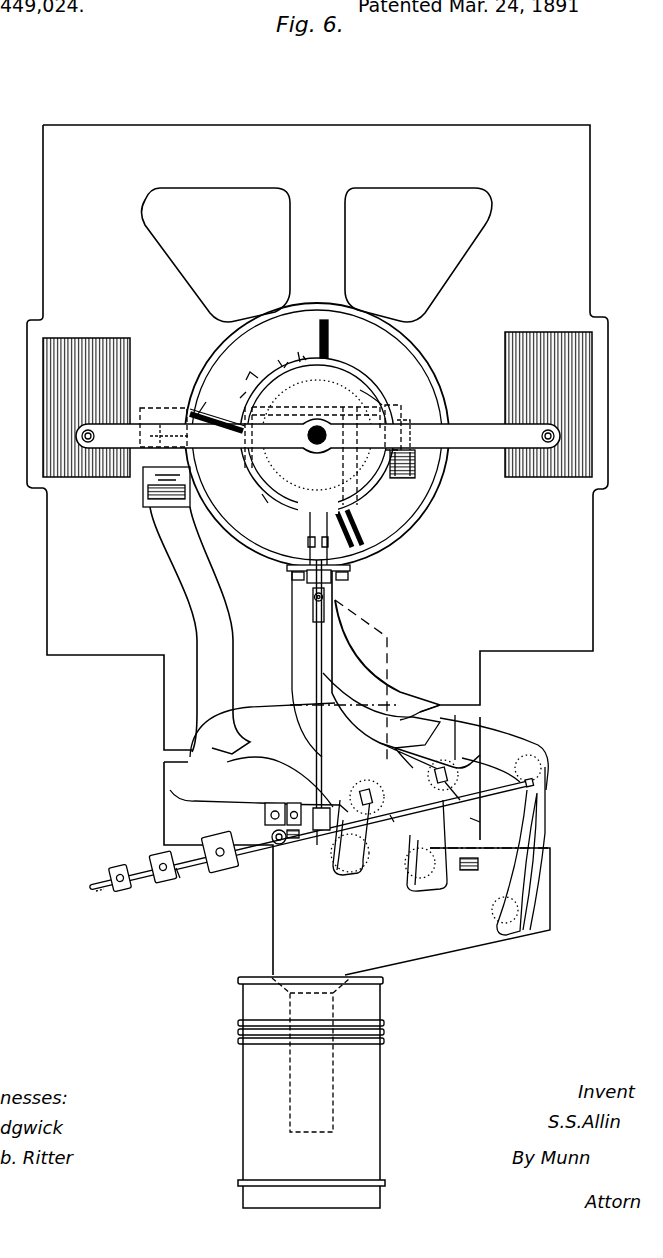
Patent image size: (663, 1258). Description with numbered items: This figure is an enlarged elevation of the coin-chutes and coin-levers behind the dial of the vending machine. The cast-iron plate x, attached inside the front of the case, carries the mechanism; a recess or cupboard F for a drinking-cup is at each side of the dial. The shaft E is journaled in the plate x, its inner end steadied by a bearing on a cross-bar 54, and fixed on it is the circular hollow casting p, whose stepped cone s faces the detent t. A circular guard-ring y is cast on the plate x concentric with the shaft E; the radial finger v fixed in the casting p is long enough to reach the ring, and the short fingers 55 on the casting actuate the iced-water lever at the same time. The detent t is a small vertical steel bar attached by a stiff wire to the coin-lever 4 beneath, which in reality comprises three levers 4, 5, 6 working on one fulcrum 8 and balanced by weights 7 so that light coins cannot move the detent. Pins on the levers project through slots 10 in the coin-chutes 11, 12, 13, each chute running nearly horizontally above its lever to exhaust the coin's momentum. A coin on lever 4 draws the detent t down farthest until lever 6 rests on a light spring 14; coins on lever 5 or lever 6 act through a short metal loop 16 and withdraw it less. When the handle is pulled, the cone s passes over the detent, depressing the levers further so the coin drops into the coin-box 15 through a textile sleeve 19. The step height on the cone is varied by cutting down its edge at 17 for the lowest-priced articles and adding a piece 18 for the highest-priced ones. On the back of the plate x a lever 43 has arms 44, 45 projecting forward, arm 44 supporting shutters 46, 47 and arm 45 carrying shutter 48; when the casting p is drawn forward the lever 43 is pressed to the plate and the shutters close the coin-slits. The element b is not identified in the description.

The cast-iron plate x is at (317, 550).
The recess or cupboard F is at (317, 404).
The circular guard-ring y is at (207, 364).
The circular hollow casting p is at (362, 382).
The cone s is at (382, 397).
The shaft E is at (317, 445).
The cross-bar 54 is at (318, 436).
The lever 43 is at (300, 410).
The shutter 46 is at (163, 408).
The shutter 48 is at (400, 410).
The added piece 18 is at (266, 500).
The cut-down step edge 17 is at (238, 398).
The shutter 47 is at (222, 412).
The radial bar or finger v is at (207, 397).
The arm 44 is at (192, 452).
The arm 45 is at (414, 455).
The short fingers 55 is at (358, 535).
The detent t is at (306, 566).
The coin-chute 11 is at (256, 757).
The coin-chute 12 is at (410, 742).
The coin-chute 13 is at (494, 752).
The slots 10 is at (365, 872).
The coin-lever 4 is at (255, 842).
The weight 7 is at (124, 890).
The coin-lever 5 is at (291, 853).
The coin-lever 6 is at (100, 892).
The fulcrum 8 is at (276, 846).
The metal loop 16 is at (482, 781).
The link b is at (500, 795).
The light spring 14 is at (478, 864).
The coin-box 15 is at (311, 1092).
The sleeve of textile material 19 is at (311, 1055).